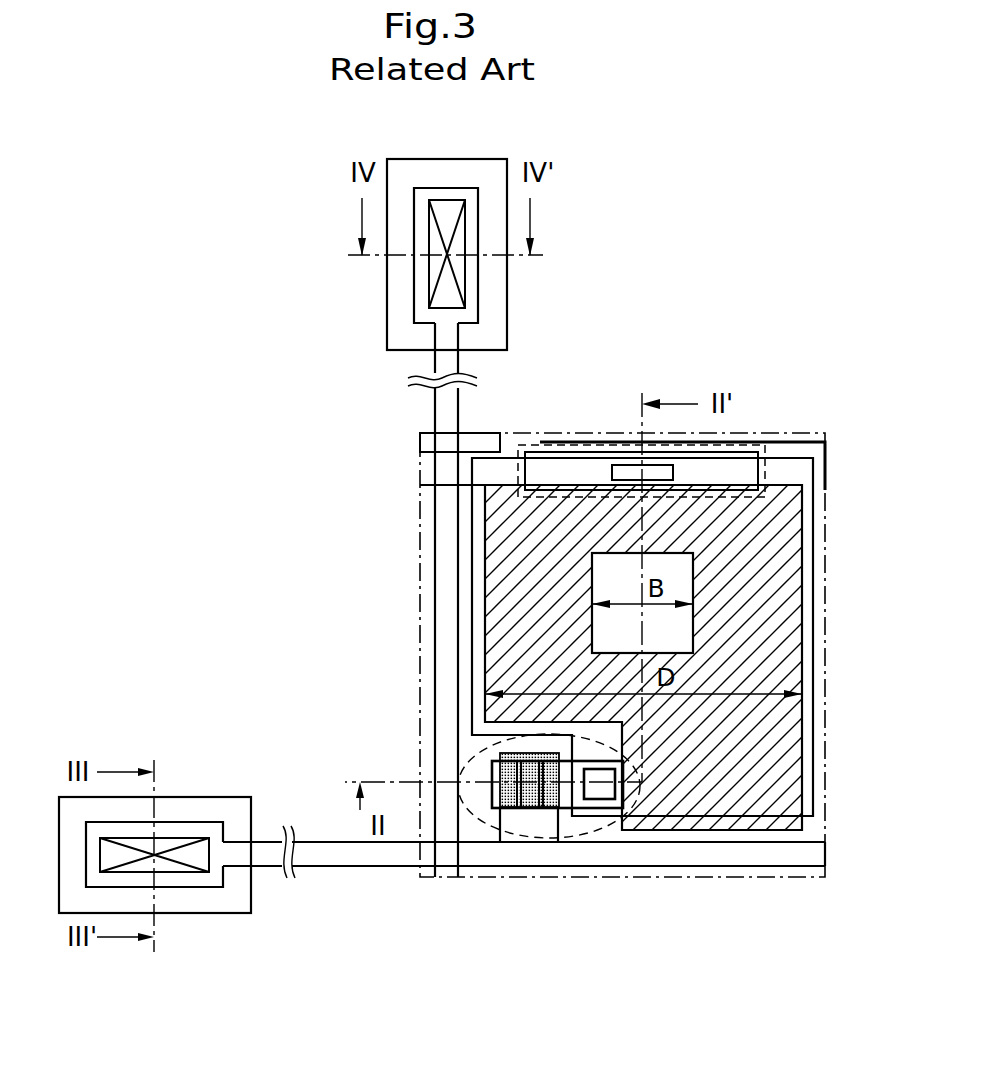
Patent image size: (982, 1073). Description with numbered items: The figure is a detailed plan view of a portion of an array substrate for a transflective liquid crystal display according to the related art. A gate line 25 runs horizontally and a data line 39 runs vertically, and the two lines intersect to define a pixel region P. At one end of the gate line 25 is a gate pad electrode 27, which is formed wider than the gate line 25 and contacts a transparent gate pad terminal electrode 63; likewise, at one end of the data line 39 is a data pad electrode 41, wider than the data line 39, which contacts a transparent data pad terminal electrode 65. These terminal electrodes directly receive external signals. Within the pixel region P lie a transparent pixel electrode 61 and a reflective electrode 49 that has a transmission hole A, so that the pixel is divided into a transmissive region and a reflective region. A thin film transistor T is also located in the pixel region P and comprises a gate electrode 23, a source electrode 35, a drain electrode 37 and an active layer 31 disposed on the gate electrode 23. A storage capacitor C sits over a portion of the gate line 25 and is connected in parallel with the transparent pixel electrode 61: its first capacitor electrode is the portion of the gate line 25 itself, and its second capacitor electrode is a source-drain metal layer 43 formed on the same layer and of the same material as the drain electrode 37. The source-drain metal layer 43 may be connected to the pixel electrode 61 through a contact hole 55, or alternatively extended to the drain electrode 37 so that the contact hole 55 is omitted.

The gate electrode 23 is at (492, 755).
The gate line 25 is at (328, 868).
The gate pad electrode 27 is at (197, 887).
The active layer 31 is at (528, 812).
The source electrode 35 is at (497, 812).
The drain electrode 37 is at (613, 812).
The data line 39 is at (436, 461).
The data pad electrode 41 is at (478, 312).
The source-drain metal layer 43 is at (565, 442).
The reflective electrode 49 is at (485, 508).
The contact hole 55 is at (620, 465).
The transparent pixel electrode 61 is at (470, 570).
The transparent gate pad terminal electrode 63 is at (196, 795).
The transparent data pad terminal electrode 65 is at (387, 312).
The transmission hole A is at (693, 631).
The storage capacitor C is at (765, 477).
The pixel region P is at (825, 520).
The thin film transistor T is at (548, 840).